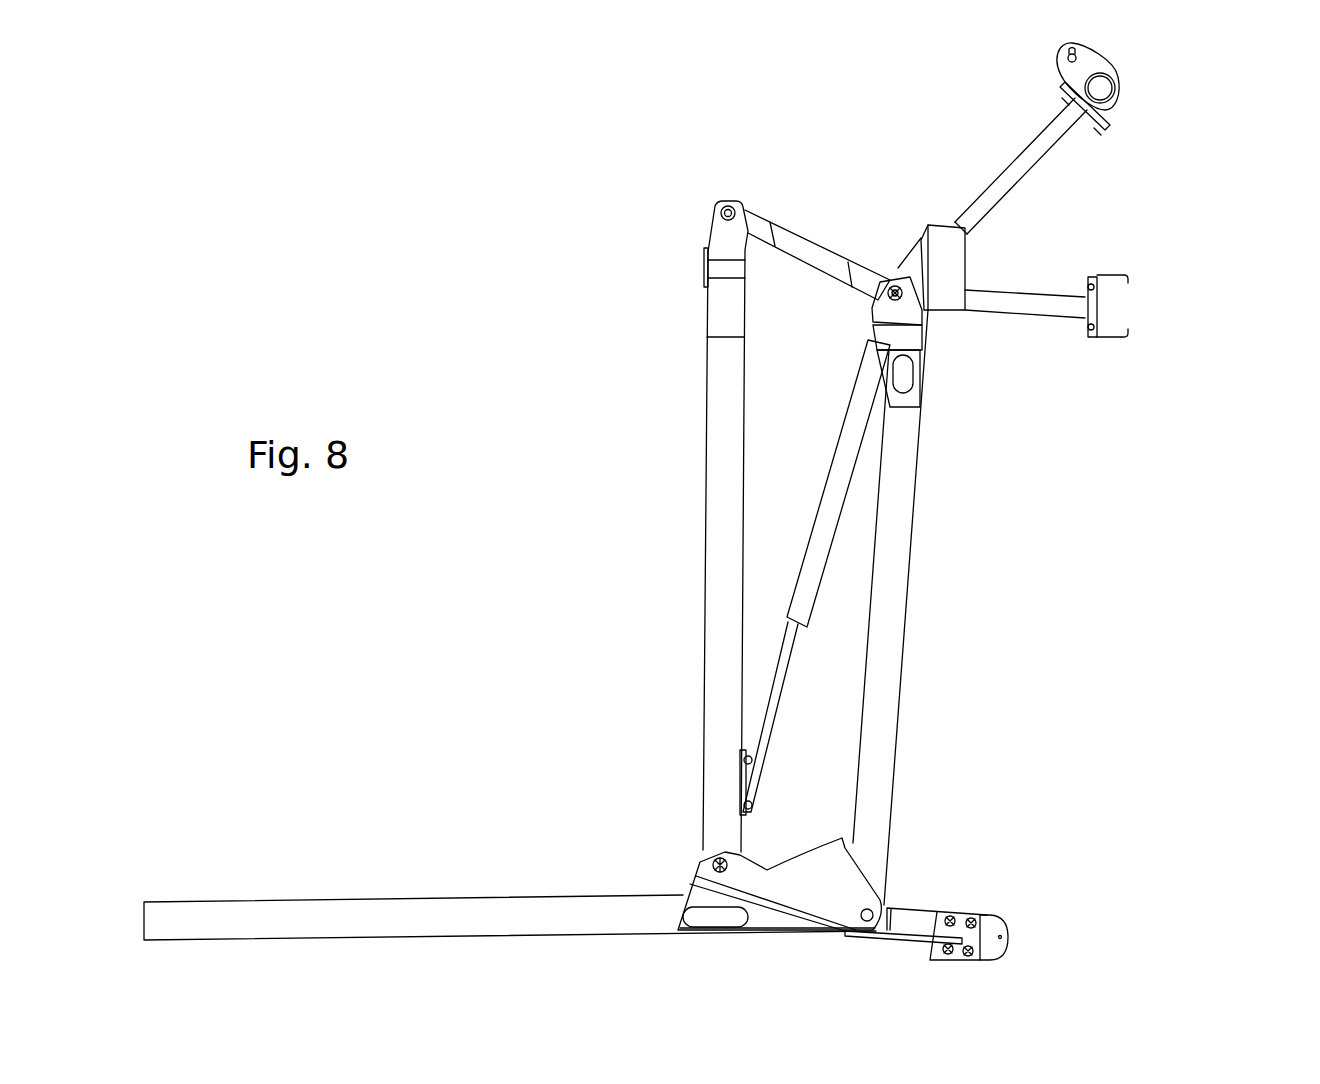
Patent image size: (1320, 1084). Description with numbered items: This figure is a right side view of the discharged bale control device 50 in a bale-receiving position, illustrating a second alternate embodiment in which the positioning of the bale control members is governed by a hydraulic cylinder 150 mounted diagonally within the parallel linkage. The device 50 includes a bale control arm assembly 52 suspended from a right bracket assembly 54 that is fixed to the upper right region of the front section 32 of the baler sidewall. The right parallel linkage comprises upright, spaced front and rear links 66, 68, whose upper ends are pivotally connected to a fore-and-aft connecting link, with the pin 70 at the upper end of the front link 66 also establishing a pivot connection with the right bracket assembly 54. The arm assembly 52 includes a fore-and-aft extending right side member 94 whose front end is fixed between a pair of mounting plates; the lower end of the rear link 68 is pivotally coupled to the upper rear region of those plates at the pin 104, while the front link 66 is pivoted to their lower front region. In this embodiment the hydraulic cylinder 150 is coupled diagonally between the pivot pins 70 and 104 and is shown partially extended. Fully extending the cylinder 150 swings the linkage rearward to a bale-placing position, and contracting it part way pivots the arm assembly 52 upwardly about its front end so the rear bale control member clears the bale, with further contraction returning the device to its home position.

The front section 32 is at (1110, 55).
The discharged bale control device 50 is at (672, 626).
The bale control arm assembly 52 is at (503, 858).
The right bracket assembly 54 is at (993, 163).
The front link 66 is at (917, 463).
The rear link 68 is at (707, 440).
The pin 70 is at (893, 282).
The right side member 94 is at (326, 902).
The pin 104 is at (712, 860).
The hydraulic cylinder 150 is at (842, 442).